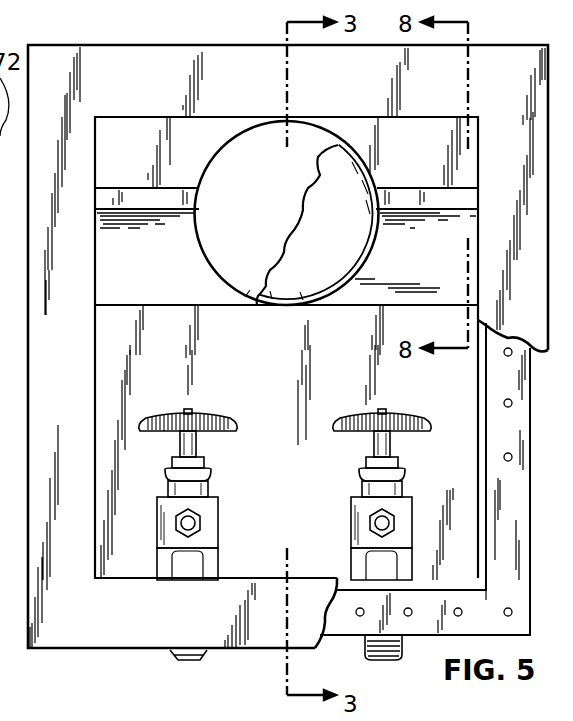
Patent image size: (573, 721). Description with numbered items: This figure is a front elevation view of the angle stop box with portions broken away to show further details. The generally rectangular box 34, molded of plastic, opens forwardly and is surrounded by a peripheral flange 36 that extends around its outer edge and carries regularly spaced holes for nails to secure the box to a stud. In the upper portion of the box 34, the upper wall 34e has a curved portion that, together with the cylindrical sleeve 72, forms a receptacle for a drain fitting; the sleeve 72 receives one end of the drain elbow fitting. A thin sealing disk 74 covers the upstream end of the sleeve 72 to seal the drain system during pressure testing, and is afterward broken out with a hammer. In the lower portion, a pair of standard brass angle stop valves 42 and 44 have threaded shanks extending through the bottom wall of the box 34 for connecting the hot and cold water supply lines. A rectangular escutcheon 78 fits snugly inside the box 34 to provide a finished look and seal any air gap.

The rectangular escutcheon 78 is at (102, 633).
The upper wall 34e is at (173, 268).
The sealing disk 74 is at (271, 211).
The cylindrical sleeve 72 is at (325, 290).
The box 34 is at (480, 460).
The peripheral flange 36 is at (500, 383).
The angle stop valve 42 is at (214, 527).
The angle stop valve 44 is at (353, 511).